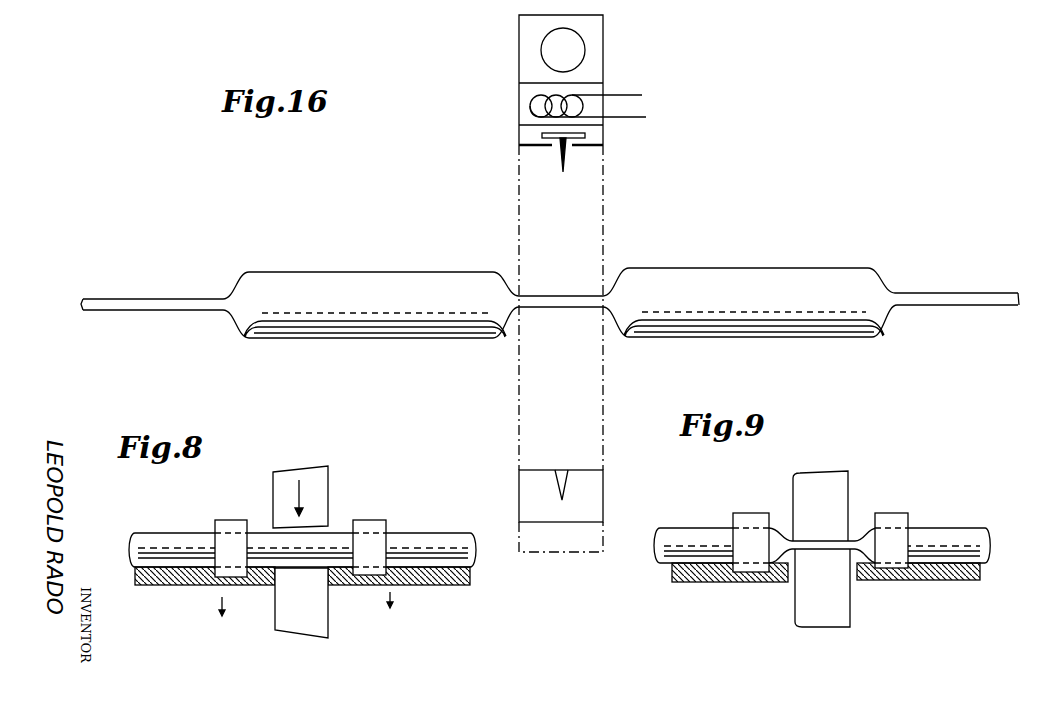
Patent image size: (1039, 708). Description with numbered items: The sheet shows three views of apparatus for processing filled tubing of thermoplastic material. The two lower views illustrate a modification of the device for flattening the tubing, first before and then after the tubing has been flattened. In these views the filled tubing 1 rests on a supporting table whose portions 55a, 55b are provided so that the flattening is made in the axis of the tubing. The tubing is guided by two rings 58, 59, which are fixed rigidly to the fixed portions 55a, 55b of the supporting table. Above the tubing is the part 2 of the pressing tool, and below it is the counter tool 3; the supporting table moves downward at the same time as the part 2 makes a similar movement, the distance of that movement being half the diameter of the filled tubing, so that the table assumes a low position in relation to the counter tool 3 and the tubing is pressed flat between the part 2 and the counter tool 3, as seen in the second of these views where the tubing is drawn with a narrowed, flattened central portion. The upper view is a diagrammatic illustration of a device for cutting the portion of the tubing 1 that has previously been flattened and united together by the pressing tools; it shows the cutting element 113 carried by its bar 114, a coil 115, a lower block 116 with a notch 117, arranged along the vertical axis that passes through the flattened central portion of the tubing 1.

In FIG. 16, the glass tube 1 is at (744, 278).
In FIG. 8, the glass tube 1 is at (432, 515).
In FIG. 9, the glass tube 1 is at (942, 530).
In FIG. 8, the part of the pressing tool 2 is at (318, 485).
In FIG. 9, the part of the pressing tool 2 is at (794, 483).
In FIG. 8, the counter tool 3 is at (320, 615).
In FIG. 9, the counter tool 3 is at (838, 613).
In FIG. 8, the ring 58 is at (228, 527).
In FIG. 9, the ring 58 is at (745, 513).
In FIG. 8, the ring 59 is at (370, 526).
In FIG. 9, the ring 59 is at (900, 498).
In FIG. 8, the portion of the supporting table 55a is at (176, 577).
In FIG. 9, the portion of the supporting table 55a is at (695, 575).
In FIG. 8, the portion of the supporting table 55b is at (432, 577).
In FIG. 9, the portion of the supporting table 55b is at (940, 576).
In FIG. 16, the cutting tool 113 is at (568, 163).
In FIG. 16, the tool holder bar 114 is at (526, 137).
In FIG. 16, the heating coil 115 is at (531, 102).
In FIG. 16, the holder block 116 is at (527, 498).
In FIG. 16, the V-notch 117 is at (565, 487).